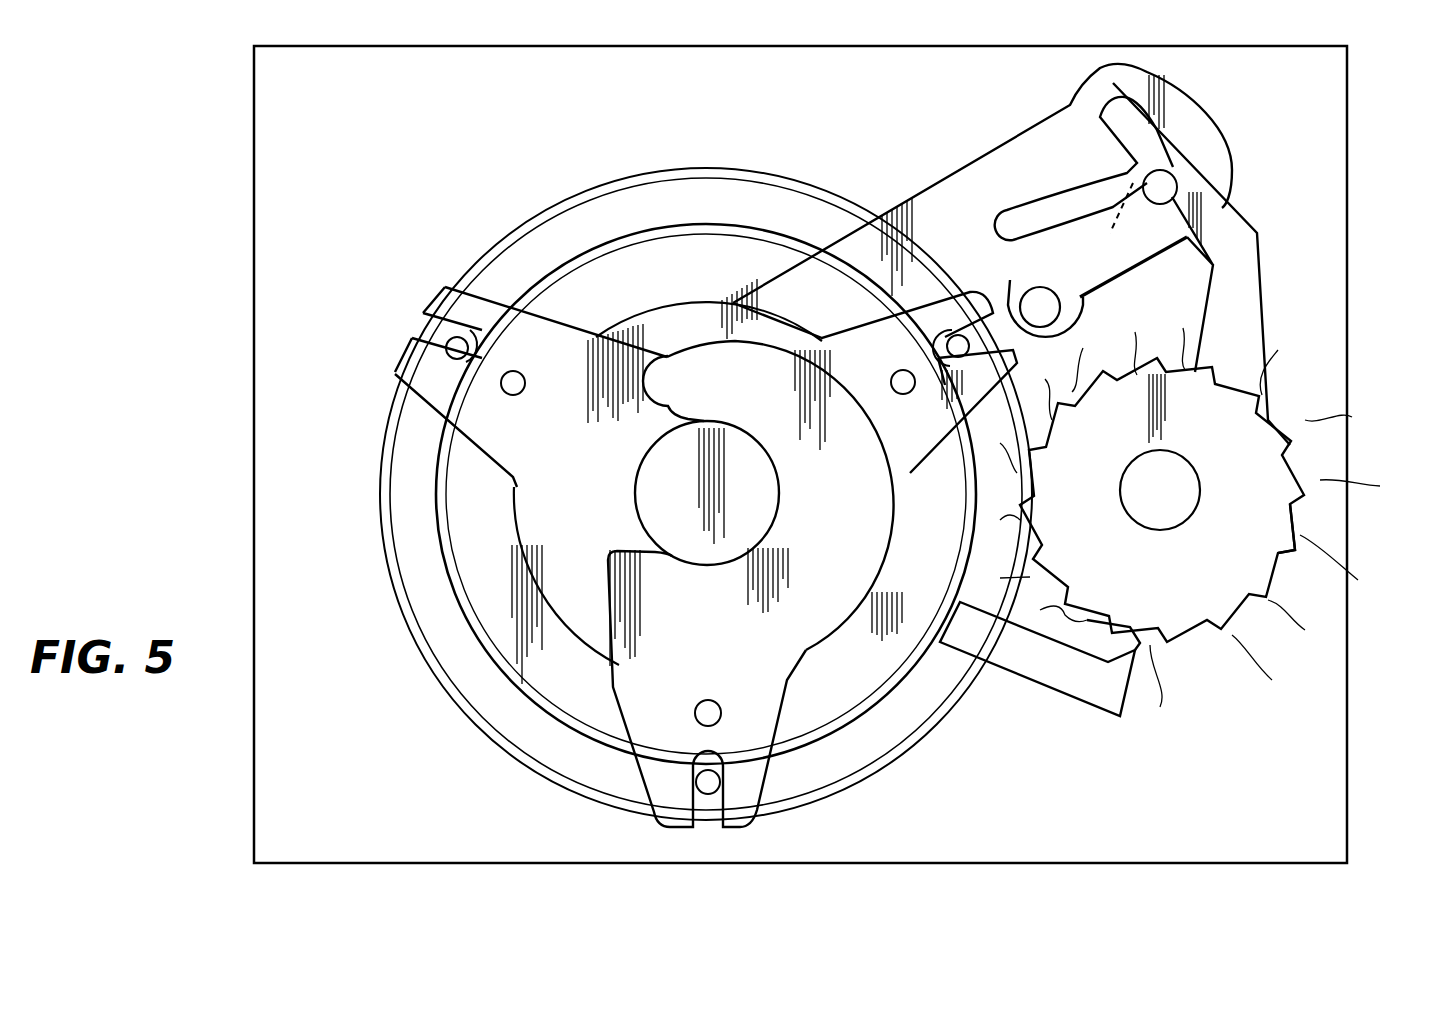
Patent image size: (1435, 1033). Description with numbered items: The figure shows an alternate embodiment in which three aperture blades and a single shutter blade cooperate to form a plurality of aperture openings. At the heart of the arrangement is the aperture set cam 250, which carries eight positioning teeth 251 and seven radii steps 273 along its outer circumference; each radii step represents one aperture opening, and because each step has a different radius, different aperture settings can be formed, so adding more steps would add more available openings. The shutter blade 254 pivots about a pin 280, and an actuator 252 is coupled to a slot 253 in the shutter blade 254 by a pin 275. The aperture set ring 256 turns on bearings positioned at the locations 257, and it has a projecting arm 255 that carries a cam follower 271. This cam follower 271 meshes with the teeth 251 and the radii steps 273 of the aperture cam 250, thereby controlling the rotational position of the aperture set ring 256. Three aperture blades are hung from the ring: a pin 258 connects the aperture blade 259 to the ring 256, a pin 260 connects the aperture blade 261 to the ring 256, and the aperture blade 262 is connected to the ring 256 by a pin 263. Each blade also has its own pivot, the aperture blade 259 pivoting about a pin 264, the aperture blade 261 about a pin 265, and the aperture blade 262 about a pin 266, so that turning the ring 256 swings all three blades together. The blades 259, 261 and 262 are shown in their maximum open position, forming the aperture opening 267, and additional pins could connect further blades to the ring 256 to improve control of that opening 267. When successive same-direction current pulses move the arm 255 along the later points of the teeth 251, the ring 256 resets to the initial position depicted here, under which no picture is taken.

The aperture set cam 250 is at (1200, 570).
The positioning teeth 251 is at (1305, 525).
The actuator 252 is at (1240, 330).
The slot 253 is at (1075, 205).
The shutter blade 254 is at (950, 197).
The arm 255 is at (1063, 675).
The aperture set ring 256 is at (878, 745).
The locations 257 is at (726, 240).
The pin 258 is at (955, 342).
The aperture blade 259 is at (693, 335).
The pin 260 is at (455, 360).
The aperture blade 261 is at (527, 455).
The aperture blade 262 is at (787, 628).
The pin 263 is at (706, 815).
The pin 264 is at (903, 380).
The pin 265 is at (520, 383).
The pin 266 is at (708, 700).
The aperture opening 267 is at (653, 485).
The cam follower 271 is at (1143, 645).
The radii steps 273 is at (1200, 636).
The pin 275 is at (1128, 215).
The pin 280 is at (1020, 308).